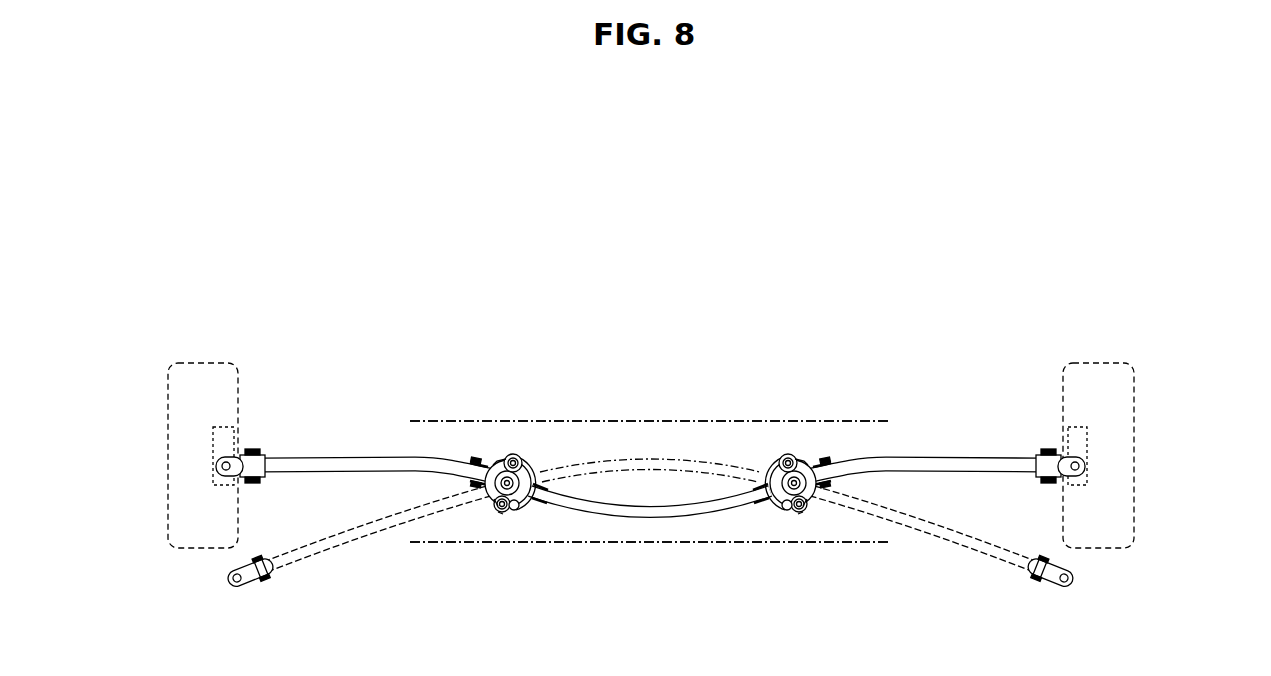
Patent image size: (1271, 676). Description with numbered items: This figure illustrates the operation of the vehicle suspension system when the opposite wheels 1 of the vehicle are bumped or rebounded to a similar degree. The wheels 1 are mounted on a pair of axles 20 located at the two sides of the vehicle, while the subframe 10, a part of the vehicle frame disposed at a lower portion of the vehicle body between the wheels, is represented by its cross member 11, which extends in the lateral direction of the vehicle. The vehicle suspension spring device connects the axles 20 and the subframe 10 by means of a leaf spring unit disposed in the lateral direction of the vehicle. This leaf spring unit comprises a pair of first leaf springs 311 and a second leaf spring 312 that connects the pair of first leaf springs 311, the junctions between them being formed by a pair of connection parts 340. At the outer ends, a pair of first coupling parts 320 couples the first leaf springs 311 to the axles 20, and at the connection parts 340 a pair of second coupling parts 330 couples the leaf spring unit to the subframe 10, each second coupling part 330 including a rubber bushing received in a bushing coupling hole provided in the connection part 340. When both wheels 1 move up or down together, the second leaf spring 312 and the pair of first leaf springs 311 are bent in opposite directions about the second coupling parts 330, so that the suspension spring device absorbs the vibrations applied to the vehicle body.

The wheel 1 is at (168, 418).
The axle 20 is at (213, 441).
The cross member 11 is at (713, 420).
The subframe 10 is at (650, 481).
The first leaf spring 311 is at (320, 458).
The second leaf spring 312 is at (645, 520).
The first coupling part 320 is at (218, 474).
The second coupling part 330 is at (497, 512).
The connection part 340 is at (522, 512).